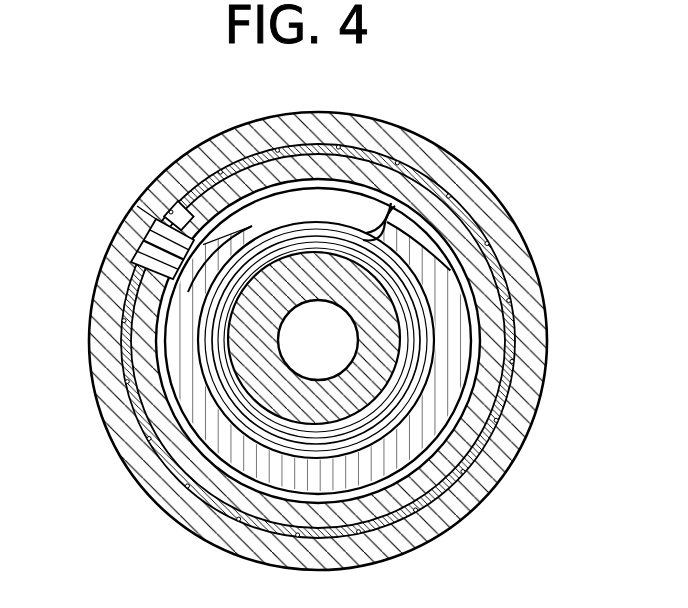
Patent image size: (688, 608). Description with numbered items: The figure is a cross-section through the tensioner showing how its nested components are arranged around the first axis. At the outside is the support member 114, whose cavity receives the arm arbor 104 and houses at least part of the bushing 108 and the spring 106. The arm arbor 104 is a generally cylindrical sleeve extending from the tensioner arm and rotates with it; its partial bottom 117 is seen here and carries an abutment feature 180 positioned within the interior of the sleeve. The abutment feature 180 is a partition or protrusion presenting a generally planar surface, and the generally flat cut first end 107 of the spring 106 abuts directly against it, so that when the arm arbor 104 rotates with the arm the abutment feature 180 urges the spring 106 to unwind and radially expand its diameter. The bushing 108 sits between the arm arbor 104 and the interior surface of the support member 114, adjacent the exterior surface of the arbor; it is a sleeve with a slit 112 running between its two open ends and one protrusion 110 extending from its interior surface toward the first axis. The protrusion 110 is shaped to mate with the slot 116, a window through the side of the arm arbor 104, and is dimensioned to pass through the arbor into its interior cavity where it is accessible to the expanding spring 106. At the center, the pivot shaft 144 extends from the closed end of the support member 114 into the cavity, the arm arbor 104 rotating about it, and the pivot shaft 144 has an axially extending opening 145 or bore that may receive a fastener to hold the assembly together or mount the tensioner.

The arm arbor 104 is at (493, 440).
The spring 106 is at (273, 200).
The first end of the spring 107 is at (373, 207).
The bushing 108 is at (513, 333).
The protrusion 110 is at (134, 262).
The slit 112 is at (137, 205).
The support member 114 is at (543, 362).
The slot 116 is at (178, 212).
The partial bottom 117 is at (483, 292).
The pivot shaft 144 is at (255, 372).
The axially extending opening 145 is at (316, 302).
The abutment feature 180 is at (413, 215).